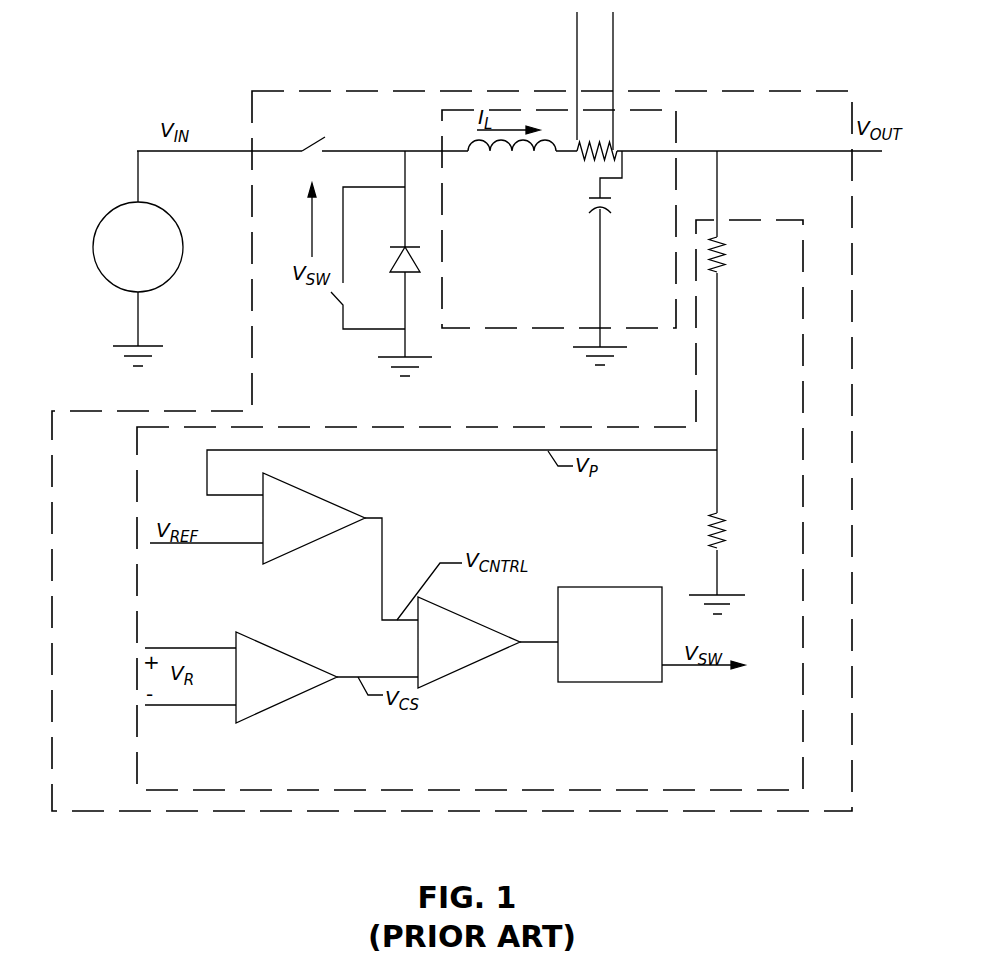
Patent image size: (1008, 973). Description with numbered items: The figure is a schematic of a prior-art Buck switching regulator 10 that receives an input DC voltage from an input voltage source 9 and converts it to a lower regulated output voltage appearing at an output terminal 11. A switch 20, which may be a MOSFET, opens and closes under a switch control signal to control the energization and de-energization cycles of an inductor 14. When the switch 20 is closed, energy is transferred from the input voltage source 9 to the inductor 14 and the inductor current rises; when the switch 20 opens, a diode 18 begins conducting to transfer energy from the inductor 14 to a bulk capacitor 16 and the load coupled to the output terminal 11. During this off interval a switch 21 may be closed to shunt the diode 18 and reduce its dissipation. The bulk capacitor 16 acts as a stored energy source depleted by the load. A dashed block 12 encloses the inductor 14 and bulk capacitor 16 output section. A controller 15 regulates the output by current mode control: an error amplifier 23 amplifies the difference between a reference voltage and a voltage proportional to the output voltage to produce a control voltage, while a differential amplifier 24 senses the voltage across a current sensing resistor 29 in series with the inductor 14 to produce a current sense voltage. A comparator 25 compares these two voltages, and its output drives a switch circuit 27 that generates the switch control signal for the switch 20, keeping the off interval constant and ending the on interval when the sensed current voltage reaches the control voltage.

The input voltage source 9 is at (118, 207).
The Buck switching regulator 10 is at (852, 243).
The output terminal 11 is at (863, 151).
The output filter 12 is at (676, 122).
The inductor 14 is at (490, 152).
The controller 15 is at (465, 423).
The bulk capacitor 16 is at (607, 198).
The diode 18 is at (400, 277).
The switch 20 is at (312, 138).
The switch 21 is at (337, 300).
The error amplifier 23 is at (330, 497).
The differential amplifier 24 is at (272, 647).
The comparator 25 is at (455, 608).
The switch circuit 27 is at (640, 688).
The current sensing resistor 29 is at (592, 143).